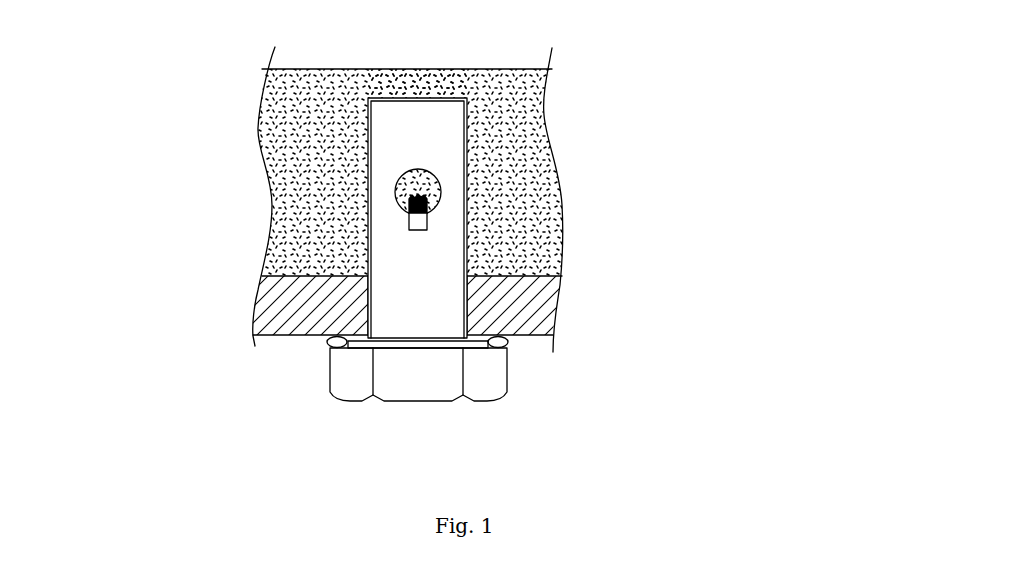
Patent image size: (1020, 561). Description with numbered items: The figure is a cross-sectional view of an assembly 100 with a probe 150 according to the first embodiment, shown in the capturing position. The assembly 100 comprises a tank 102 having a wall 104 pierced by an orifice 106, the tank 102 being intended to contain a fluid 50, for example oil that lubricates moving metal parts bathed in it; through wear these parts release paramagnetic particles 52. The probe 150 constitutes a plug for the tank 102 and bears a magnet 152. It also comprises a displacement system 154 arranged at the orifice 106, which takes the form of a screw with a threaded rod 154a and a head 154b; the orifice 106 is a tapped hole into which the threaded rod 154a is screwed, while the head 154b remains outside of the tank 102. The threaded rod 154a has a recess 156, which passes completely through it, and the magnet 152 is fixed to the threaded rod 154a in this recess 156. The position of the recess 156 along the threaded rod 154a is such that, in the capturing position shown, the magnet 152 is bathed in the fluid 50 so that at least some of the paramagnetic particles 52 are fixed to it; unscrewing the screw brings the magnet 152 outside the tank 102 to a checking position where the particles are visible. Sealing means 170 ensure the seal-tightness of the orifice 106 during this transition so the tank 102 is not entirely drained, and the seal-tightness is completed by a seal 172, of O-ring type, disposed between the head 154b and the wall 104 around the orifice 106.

The assembly 100 is at (590, 80).
The tank 102 is at (618, 153).
The wall 104 is at (272, 305).
The orifice 106 is at (368, 304).
The fluid 50 is at (513, 72).
The paramagnetic particles 52 is at (452, 77).
The probe 150 is at (431, 240).
The magnet 152 is at (418, 222).
The displacement system 154 is at (445, 240).
The threaded rod 154a is at (382, 108).
The head 154b is at (400, 387).
The recess 156 is at (398, 179).
The sealing means 170 is at (367, 322).
The seal 172 is at (337, 348).